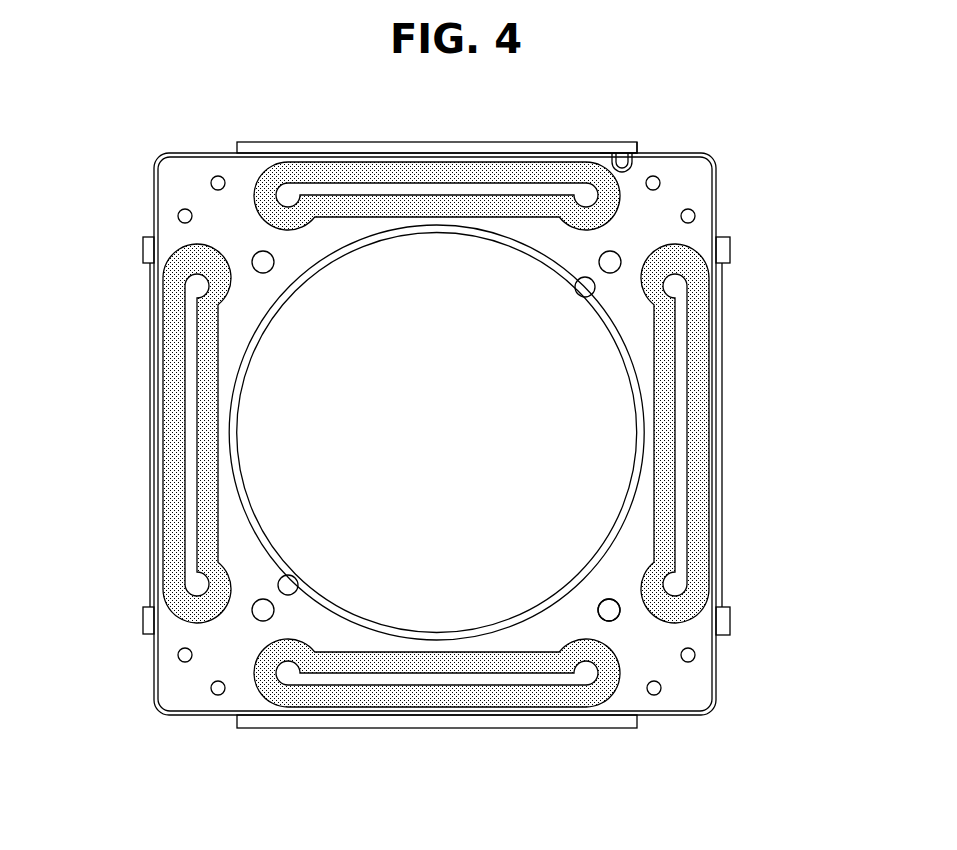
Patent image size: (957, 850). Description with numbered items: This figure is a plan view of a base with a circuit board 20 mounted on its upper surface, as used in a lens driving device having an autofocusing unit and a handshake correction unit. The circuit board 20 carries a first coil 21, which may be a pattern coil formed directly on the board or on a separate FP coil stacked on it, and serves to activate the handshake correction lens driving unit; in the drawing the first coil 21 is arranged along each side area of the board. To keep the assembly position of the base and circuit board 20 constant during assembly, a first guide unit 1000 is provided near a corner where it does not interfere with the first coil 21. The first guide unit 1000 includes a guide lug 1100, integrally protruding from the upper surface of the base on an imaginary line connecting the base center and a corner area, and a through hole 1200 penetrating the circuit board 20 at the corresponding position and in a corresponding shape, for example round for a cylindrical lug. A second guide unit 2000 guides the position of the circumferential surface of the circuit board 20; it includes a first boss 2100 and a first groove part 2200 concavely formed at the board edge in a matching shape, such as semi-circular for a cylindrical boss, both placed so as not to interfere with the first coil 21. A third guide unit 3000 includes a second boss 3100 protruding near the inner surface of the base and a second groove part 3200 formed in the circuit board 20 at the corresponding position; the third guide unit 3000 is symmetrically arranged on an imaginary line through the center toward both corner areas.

The circuit board 20 is at (183, 682).
The first coil 21 is at (174, 424).
The first guide unit 1000 is at (747, 585).
The guide lug 1100 is at (610, 610).
The through hole 1200 is at (617, 602).
The second guide unit 2000 is at (493, 394).
The first boss 2100 is at (621, 162).
The first groove part 2200 is at (634, 160).
The third guide unit 3000 is at (424, 523).
The second boss 3100 is at (292, 597).
The second groove part 3200 is at (283, 597).